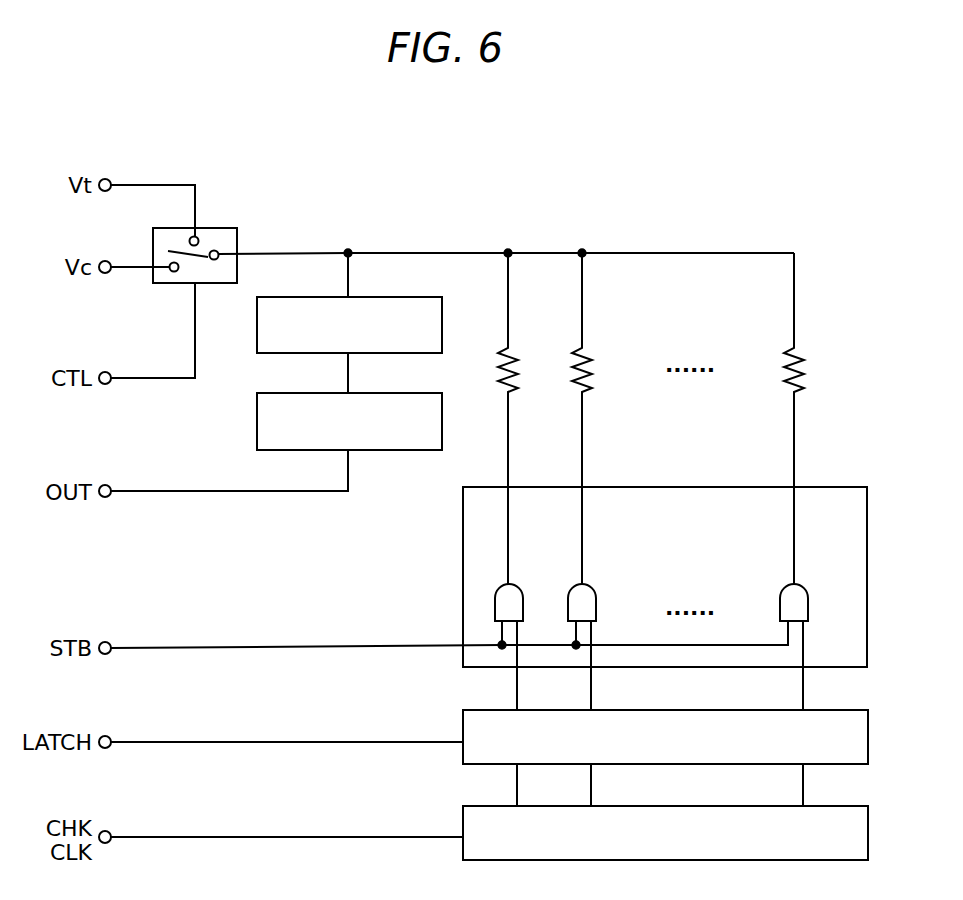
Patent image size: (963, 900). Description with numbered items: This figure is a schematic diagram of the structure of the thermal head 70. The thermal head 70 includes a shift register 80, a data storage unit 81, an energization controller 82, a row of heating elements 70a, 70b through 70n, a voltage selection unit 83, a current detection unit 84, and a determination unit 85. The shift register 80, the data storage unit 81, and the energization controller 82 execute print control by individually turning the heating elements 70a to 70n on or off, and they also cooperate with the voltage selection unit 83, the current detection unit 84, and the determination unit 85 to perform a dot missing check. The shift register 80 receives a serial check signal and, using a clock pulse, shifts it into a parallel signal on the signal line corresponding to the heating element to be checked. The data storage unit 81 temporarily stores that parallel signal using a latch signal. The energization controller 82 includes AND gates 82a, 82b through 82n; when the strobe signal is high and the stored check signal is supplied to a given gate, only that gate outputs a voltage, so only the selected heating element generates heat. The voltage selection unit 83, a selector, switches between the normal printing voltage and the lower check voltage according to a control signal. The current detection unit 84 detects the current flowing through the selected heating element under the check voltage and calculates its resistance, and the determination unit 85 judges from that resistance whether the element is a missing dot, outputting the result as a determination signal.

The thermal head 70 is at (667, 155).
The heating element 70a is at (512, 348).
The heating element 70b is at (586, 348).
The heating element 70n is at (798, 348).
The shift register 80 is at (821, 806).
The data storage unit 81 is at (821, 710).
The energization controller 82 is at (821, 486).
The AND gate 82a is at (523, 587).
The AND gate 82b is at (596, 587).
The AND gate 82n is at (808, 587).
The voltage selection unit 83 is at (215, 227).
The current detection unit 84 is at (397, 297).
The determination unit 85 is at (397, 393).